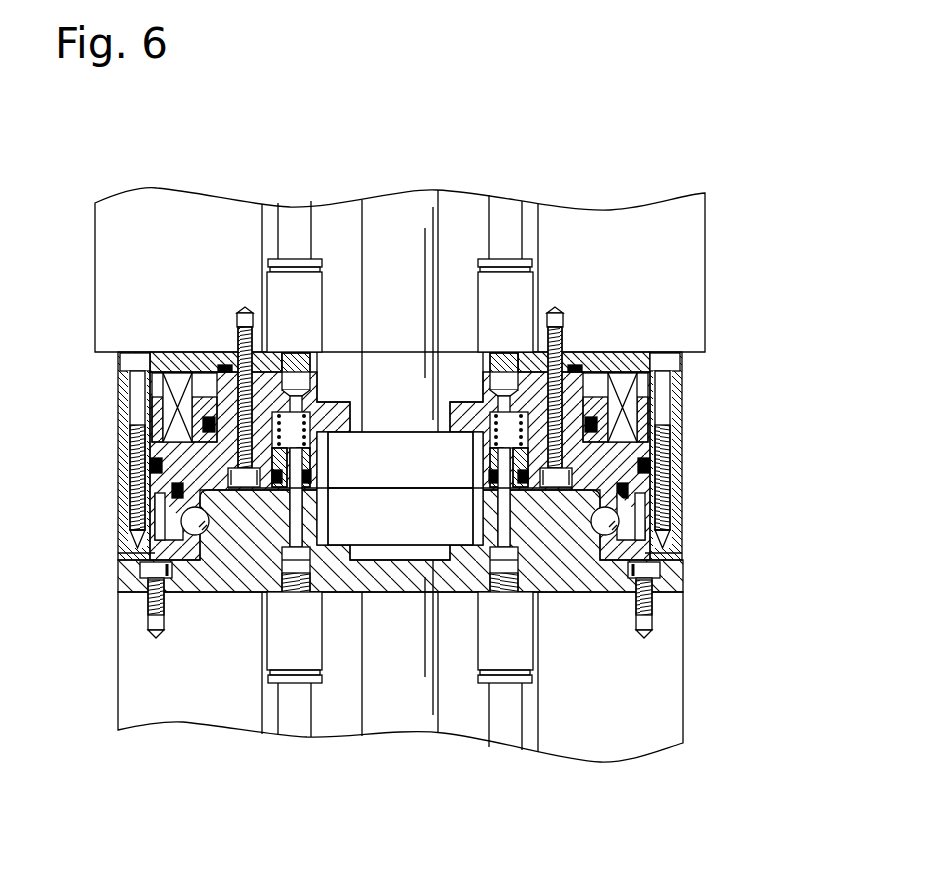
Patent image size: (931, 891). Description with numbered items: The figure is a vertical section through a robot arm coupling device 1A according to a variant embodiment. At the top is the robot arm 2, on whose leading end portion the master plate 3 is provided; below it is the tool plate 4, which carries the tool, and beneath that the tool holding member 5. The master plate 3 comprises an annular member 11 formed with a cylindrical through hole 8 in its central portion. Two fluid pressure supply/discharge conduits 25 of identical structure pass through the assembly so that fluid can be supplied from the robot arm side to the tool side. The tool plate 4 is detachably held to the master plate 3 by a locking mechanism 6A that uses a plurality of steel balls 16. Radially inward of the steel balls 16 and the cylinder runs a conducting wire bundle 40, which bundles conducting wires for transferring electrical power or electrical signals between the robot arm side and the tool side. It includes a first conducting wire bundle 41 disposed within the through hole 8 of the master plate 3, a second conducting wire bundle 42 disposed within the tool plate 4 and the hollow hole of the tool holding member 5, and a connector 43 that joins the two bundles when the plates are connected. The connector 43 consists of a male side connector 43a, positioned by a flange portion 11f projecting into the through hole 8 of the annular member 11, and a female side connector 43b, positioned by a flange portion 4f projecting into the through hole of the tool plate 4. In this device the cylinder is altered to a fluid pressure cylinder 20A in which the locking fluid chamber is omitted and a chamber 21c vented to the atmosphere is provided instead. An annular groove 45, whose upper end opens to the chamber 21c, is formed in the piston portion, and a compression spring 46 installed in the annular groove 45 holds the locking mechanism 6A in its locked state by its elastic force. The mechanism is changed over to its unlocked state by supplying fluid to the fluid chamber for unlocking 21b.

The robot arm coupling device 1A is at (740, 250).
The robot arm 2 is at (95, 270).
The master plate 3 is at (118, 443).
The tool plate 4 is at (118, 578).
The flange portion 4f is at (462, 560).
The tool holding member 5 is at (118, 680).
The locking mechanism 6A is at (594, 550).
The through hole 8 is at (352, 390).
The annular member 11 is at (530, 385).
The flange portion 11f is at (497, 397).
The steel balls 16 is at (605, 523).
The fluid pressure cylinder 20A is at (192, 370).
The fluid chamber for unlocking 21b is at (668, 478).
The chamber vented to the atmosphere 21c is at (598, 388).
The fluid pressure supply/discharge conduits 25 is at (315, 225).
The conducting wire bundle 40 is at (443, 226).
The first conducting wire bundle 41 is at (385, 296).
The second conducting wire bundle 42 is at (390, 680).
The connector 43 is at (178, 648).
The male side connector 43a is at (385, 522).
The female side connector 43b is at (367, 472).
The annular groove 45 is at (630, 372).
The compression spring 46 is at (660, 404).